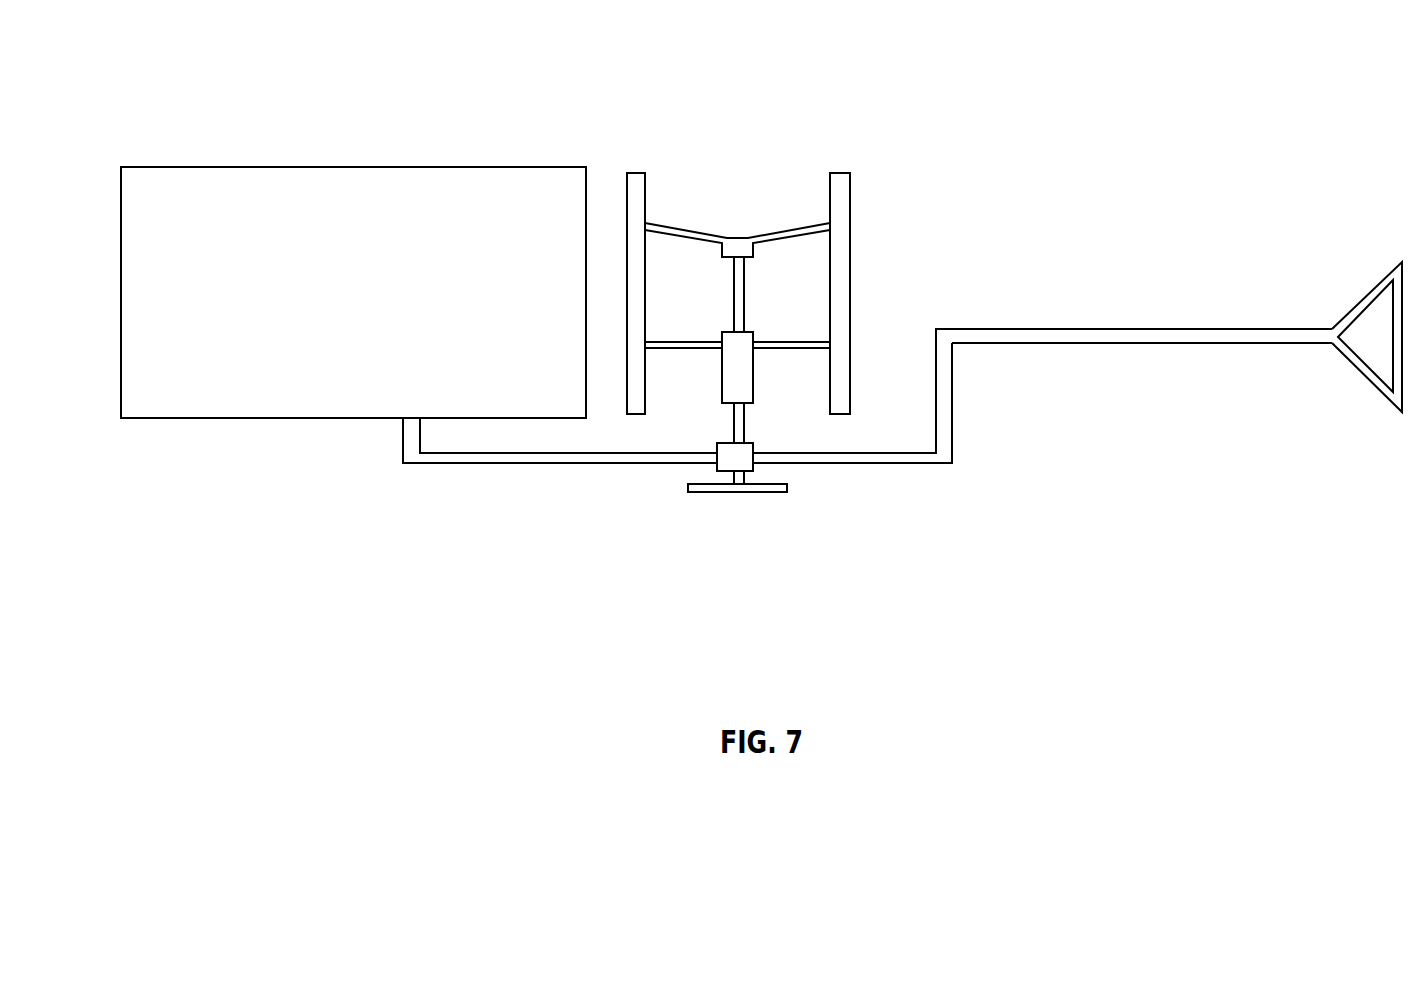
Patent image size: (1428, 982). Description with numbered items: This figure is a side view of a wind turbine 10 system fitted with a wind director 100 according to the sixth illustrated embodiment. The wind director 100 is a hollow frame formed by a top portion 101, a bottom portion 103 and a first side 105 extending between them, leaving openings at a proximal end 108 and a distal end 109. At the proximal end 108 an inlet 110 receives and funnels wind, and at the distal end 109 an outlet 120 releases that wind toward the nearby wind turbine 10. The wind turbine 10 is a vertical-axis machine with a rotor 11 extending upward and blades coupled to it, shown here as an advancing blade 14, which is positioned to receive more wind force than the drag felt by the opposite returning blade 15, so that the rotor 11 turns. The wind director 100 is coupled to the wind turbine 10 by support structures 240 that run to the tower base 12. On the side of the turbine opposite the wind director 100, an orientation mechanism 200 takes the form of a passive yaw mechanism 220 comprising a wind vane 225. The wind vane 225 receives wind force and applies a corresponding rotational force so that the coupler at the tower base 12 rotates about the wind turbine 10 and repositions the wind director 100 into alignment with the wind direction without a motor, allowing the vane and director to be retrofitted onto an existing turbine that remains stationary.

The wind director 100 is at (523, 76).
The top portion 101 is at (188, 166).
The first side 105 is at (375, 305).
The inlet 110 is at (120, 243).
The proximal end 108 is at (120, 366).
The outlet 120 is at (585, 255).
The distal end 109 is at (585, 349).
The bottom portion 103 is at (356, 420).
The wind turbine 10 is at (875, 228).
The advancing blade 14 is at (636, 173).
The returning blade 15 is at (852, 343).
The rotor 11 is at (745, 292).
The tower base 12 is at (738, 494).
The support structure 240 is at (560, 468).
The orientation mechanism 200 is at (990, 327).
The passive yaw mechanism 220 is at (1158, 327).
The wind vane 225 is at (1365, 295).